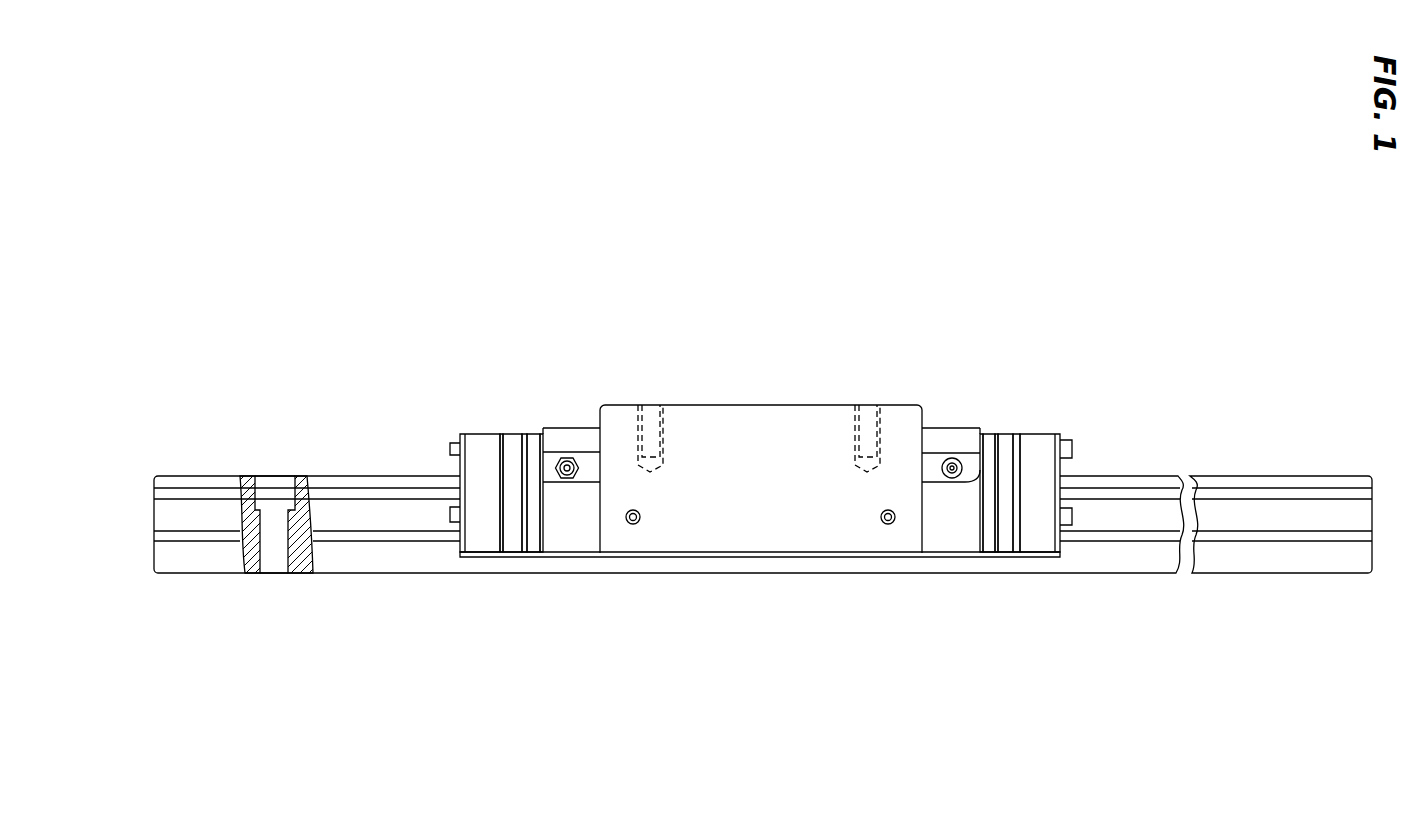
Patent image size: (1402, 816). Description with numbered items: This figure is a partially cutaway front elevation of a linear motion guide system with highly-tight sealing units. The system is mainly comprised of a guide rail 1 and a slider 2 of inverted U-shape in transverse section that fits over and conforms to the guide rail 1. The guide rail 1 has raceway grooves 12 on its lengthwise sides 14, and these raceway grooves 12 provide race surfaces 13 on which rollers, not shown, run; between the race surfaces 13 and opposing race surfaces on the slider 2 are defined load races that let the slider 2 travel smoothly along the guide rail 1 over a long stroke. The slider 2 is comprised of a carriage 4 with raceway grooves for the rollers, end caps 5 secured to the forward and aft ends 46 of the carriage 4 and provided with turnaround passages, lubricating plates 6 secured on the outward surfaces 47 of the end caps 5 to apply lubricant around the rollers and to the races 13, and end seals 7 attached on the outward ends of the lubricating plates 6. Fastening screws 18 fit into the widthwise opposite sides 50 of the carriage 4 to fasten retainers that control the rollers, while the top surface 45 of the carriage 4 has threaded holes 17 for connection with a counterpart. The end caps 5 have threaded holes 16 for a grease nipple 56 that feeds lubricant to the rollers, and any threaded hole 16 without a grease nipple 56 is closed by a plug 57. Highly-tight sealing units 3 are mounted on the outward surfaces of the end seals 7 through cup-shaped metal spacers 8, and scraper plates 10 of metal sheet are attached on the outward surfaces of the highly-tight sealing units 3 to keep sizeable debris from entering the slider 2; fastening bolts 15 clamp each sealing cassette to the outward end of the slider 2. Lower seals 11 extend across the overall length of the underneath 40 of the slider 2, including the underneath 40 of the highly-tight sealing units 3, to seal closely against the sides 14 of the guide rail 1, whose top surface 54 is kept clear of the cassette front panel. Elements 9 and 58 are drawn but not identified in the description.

The guide rail 1 is at (1180, 470).
The slider 2 is at (884, 400).
The highly-tight sealing unit 3 is at (485, 543).
The carriage 4 is at (737, 437).
The end cap 5 is at (583, 440).
The lubricating plate 6 is at (527, 452).
The end seal 7 is at (518, 452).
The spacer 8 is at (513, 545).
The wiper 9 is at (500, 455).
The scraper plate 10 is at (463, 437).
The lower seal 11 is at (840, 557).
The raceway groove 12 is at (185, 523).
The race surface 13 is at (217, 493).
The lengthwise side 14 is at (383, 562).
The fastening bolt 15 is at (448, 505).
The threaded hole 16 is at (952, 457).
The threaded hole 17 is at (643, 420).
The fastening screw 18 is at (634, 525).
The underneath 40 is at (797, 557).
The top surface 45 is at (787, 405).
The forward and aft end 46 is at (598, 522).
The outward surface 47 is at (540, 543).
The widthwise opposite side 50 is at (735, 515).
The top surface 54 is at (1125, 477).
The grease nipple 56 is at (568, 458).
The plug 57 is at (958, 455).
The fastening bolt 58 is at (298, 490).